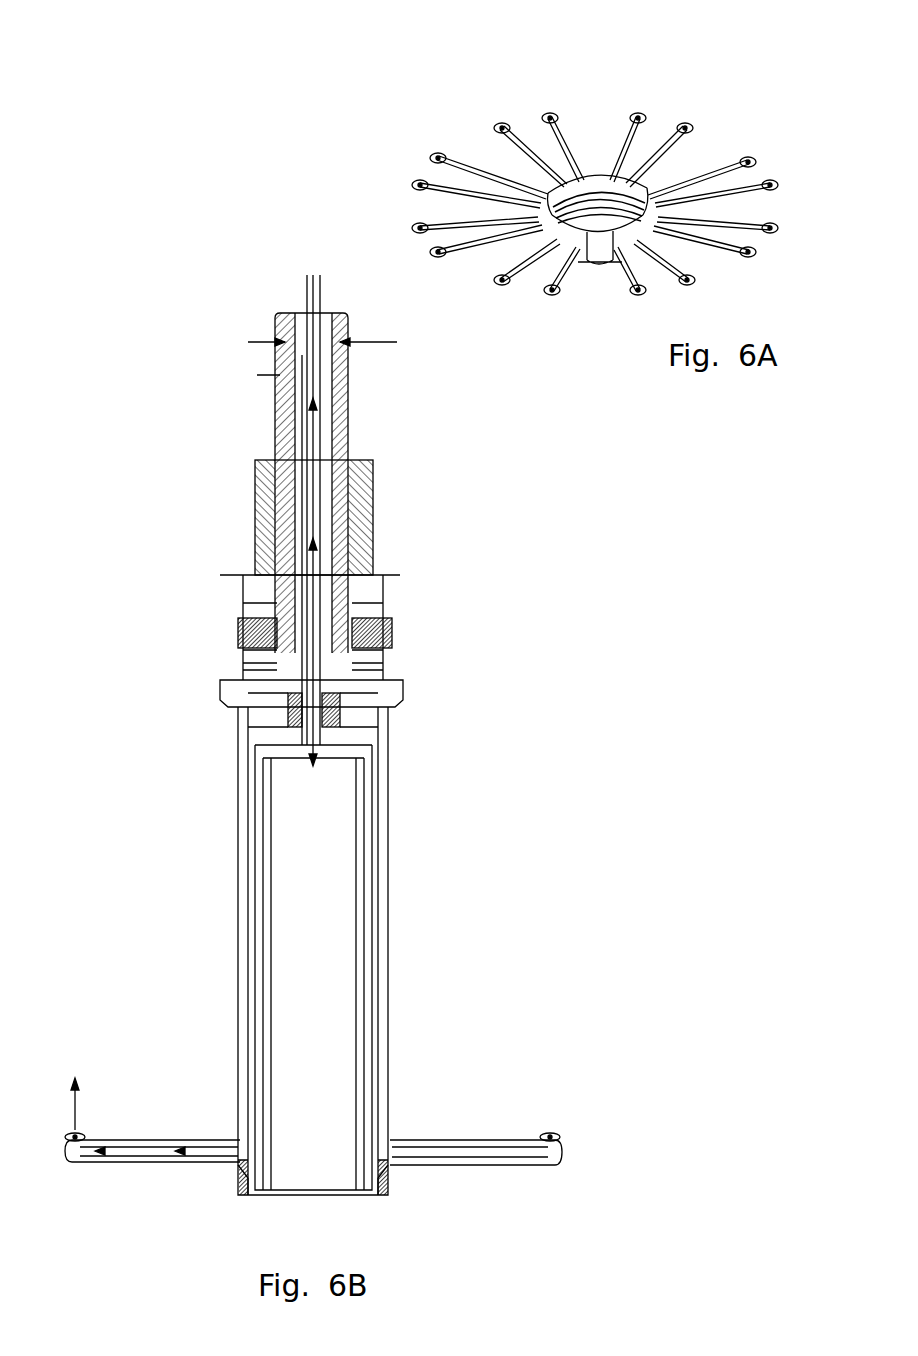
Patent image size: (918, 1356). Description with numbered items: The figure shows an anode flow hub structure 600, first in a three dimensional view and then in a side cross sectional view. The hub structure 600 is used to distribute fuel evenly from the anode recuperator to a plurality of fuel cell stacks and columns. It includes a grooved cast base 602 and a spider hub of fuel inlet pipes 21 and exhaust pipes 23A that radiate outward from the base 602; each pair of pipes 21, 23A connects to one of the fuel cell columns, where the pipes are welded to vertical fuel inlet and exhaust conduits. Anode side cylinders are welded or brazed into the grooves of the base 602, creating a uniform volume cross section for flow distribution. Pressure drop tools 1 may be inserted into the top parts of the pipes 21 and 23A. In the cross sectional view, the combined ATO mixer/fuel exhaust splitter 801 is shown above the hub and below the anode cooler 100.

In FIG. 6A, the pressure drop tool 1 is at (683, 123).
In FIG. 6B, the pressure drop tool 1 is at (87, 1132).
In FIG. 6A, the fuel inlet pipe 21 is at (412, 182).
In FIG. 6B, the fuel inlet pipe 21 is at (483, 1165).
In FIG. 6A, the exhaust pipe 23A is at (480, 173).
In FIG. 6B, the exhaust pipe 23A is at (128, 1158).
In FIG. 6B, the anode cooler 100 is at (253, 492).
In FIG. 6A, the anode flow hub structure 600 is at (800, 163).
In FIG. 6A, the grooved cast base 602 is at (650, 187).
In FIG. 6B, the grooved cast base 602 is at (232, 1180).
In FIG. 6B, the combined ATO mixer/fuel exhaust splitter 801 is at (222, 668).